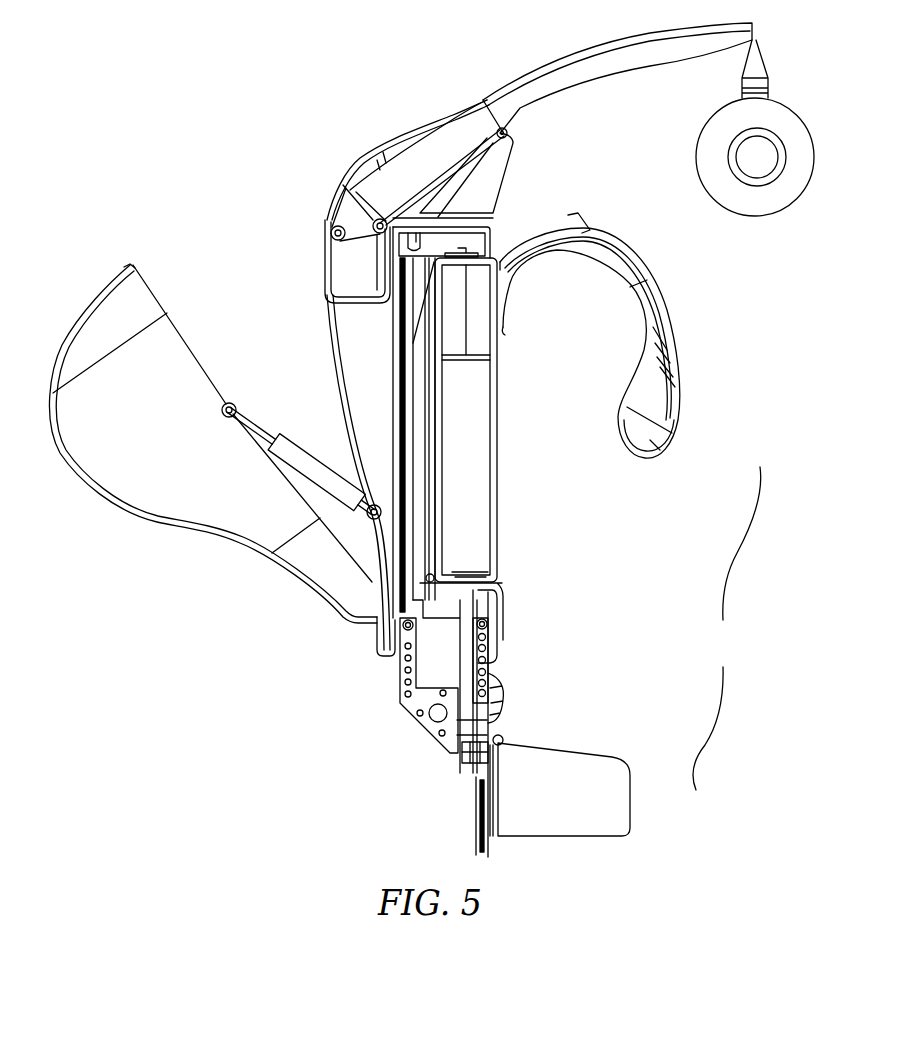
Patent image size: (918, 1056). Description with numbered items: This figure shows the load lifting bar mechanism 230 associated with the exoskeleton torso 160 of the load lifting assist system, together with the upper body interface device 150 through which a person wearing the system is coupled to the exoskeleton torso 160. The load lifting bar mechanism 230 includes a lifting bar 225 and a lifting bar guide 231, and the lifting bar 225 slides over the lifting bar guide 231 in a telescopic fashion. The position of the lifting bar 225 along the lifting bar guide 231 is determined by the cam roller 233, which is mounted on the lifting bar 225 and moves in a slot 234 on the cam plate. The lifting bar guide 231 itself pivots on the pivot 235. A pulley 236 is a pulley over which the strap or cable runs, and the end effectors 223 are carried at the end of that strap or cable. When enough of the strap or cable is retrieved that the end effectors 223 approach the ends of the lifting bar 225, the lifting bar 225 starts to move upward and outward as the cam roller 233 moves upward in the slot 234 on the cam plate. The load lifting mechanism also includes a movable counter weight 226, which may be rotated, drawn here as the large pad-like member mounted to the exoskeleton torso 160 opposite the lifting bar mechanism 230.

The upper body interface device 150 is at (727, 628).
The exoskeleton torso 160 is at (290, 686).
The end effectors 223 is at (722, 190).
The lifting bar 225 is at (620, 35).
The movable counter weight 226 is at (158, 497).
The load lifting bar mechanism 230 is at (331, 84).
The lifting bar guide 231 is at (443, 123).
The cam roller 233 is at (509, 133).
The slot 234 is at (470, 168).
The pivot 235 is at (352, 190).
The pulley 236 is at (323, 215).